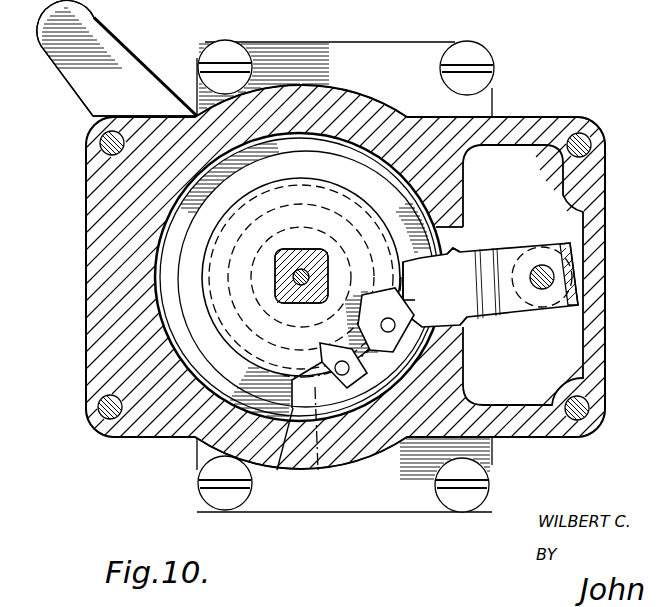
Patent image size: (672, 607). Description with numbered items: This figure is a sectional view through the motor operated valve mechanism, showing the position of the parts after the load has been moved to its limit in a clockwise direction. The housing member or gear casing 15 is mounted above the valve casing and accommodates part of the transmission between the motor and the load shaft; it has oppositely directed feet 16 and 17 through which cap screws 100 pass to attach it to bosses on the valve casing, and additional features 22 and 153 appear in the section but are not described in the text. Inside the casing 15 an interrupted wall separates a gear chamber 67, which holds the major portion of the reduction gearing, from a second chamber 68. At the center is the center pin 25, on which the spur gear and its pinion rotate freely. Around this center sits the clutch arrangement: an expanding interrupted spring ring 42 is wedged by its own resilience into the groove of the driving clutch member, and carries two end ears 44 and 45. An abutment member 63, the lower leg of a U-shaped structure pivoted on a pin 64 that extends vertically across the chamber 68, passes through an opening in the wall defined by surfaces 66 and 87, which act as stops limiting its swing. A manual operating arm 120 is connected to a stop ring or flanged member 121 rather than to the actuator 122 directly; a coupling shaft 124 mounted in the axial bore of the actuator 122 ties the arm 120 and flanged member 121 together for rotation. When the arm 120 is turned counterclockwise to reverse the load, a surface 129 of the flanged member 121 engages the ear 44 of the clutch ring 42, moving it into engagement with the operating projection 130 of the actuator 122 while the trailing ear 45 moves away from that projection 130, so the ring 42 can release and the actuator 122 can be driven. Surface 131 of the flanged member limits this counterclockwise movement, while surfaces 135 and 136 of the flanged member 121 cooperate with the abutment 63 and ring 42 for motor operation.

The housing member or gear casing 15 is at (607, 368).
The foot 16 is at (480, 452).
The foot 17 is at (480, 103).
The bolt holes 22 is at (100, 144).
The center pin 25 is at (301, 287).
The expanding interrupted spring ring 42 is at (315, 440).
The end ear 44 is at (352, 378).
The end ear 45 is at (405, 310).
The abutment member 63 is at (490, 285).
The pin 64 is at (542, 264).
The limiting surface 66 is at (462, 325).
The gear chamber 67 is at (178, 211).
The chamber 68 is at (571, 329).
The limiting surface 87 is at (462, 226).
The cap screws 100 is at (222, 50).
The manual operating arm 120 is at (118, 50).
The stop ring or flanged member 121 is at (192, 337).
The actuator 122 is at (217, 290).
The coupling shaft 124 is at (298, 249).
The surface of the flanged member 129 is at (325, 343).
The operating projection 130 is at (386, 352).
The surface of the flanged member 131 is at (280, 451).
The surface of the flanged member 135 is at (452, 250).
The surface of the flanged member 136 is at (405, 296).
The shaft square hub 153 is at (278, 280).